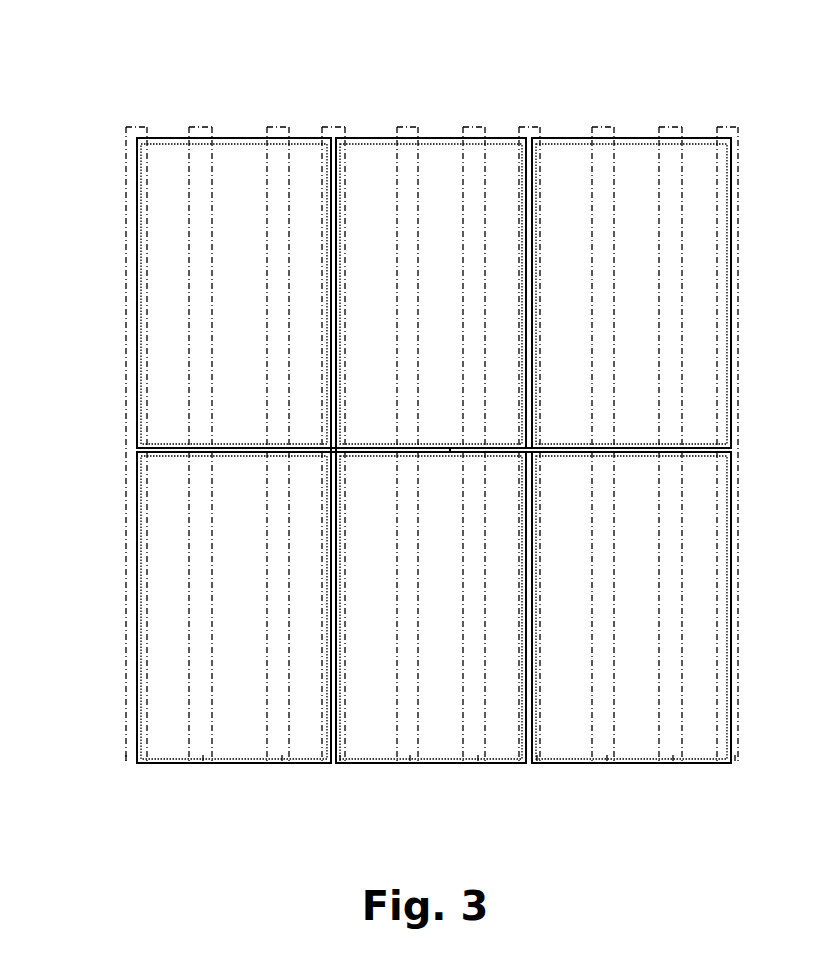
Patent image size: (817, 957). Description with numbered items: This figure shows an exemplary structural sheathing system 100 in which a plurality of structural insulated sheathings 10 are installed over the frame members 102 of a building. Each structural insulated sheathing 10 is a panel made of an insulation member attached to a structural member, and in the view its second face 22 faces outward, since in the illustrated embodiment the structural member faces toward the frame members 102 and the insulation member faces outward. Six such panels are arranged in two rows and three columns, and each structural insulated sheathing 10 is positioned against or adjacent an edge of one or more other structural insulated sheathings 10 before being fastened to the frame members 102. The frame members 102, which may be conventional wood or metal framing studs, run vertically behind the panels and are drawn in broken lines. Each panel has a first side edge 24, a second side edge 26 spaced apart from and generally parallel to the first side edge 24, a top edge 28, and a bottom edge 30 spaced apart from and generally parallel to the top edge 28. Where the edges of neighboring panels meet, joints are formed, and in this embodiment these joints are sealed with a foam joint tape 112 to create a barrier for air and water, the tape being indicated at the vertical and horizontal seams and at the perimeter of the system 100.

The structural sheathing system 100 is at (565, 104).
The structural insulated sheathing 10 is at (246, 127).
The second face 22 is at (374, 157).
The first side edge 24 is at (137, 352).
The second side edge 26 is at (337, 340).
The top edge 28 is at (226, 136).
The bottom edge 30 is at (245, 455).
The frame member 102 is at (126, 765).
The foam joint tape 112 is at (697, 137).